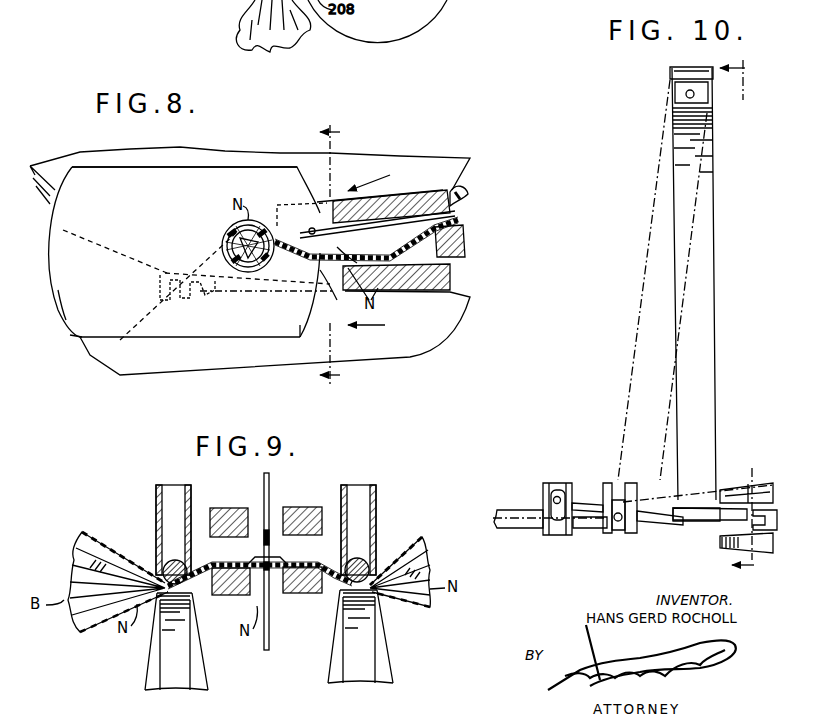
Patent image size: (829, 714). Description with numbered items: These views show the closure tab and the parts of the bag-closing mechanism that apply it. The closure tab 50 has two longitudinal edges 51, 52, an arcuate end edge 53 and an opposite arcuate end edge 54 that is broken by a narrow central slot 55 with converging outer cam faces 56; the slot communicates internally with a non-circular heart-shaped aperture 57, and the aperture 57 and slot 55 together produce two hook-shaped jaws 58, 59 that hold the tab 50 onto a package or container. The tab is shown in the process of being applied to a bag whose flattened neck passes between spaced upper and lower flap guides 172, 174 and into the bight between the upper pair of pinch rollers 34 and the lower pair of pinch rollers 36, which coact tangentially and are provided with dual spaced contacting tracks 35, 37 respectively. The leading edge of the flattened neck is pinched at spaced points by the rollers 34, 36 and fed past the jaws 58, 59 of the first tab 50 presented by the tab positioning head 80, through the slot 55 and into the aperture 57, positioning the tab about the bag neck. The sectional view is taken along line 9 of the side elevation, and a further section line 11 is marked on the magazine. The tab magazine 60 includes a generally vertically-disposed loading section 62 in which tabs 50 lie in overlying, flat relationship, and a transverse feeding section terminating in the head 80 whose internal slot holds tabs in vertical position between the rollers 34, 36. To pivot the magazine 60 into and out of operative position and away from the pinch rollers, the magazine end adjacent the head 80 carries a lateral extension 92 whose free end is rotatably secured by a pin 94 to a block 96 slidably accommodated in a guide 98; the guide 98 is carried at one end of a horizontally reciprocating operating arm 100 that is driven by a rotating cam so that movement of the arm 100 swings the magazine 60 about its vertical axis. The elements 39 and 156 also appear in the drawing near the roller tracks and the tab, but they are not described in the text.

In FIG. 8, the upper pair of pinch rollers 34 is at (424, 162).
In FIG. 8, the lower pair of pinch rollers 36 is at (117, 363).
In FIG. 8, the tape end / bead 39 is at (462, 197).
In FIG. 9, the tape end / bead 39 is at (186, 569).
In FIG. 8, the closure tab 50 is at (108, 196).
In FIG. 9, the closure tab 50 is at (256, 493).
In FIG. 10, the closure tab 50 is at (752, 506).
In FIG. 8, the longitudinal edge 51 is at (140, 164).
In FIG. 8, the longitudinal edge 52 is at (80, 337).
In FIG. 8, the arcuate end edge 53 is at (60, 309).
In FIG. 8, the arcuate end edge 54 is at (300, 329).
In FIG. 8, the central slot 55 is at (262, 238).
In FIG. 9, the central slot 55 is at (280, 553).
In FIG. 8, the cam faces 56 is at (312, 230).
In FIG. 8, the heart-shaped aperture 57 is at (225, 231).
In FIG. 8, the hook-shaped jaw 58 is at (346, 237).
In FIG. 8, the hook-shaped jaw 59 is at (310, 252).
In FIG. 8, the upper flap guide 172 is at (365, 206).
In FIG. 9, the upper flap guide 172 is at (232, 515).
In FIG. 8, the lower flap guide 174 is at (451, 277).
In FIG. 9, the lower flap guide 174 is at (218, 594).
In FIG. 8, the side block 156 is at (466, 238).
In FIG. 8, the section line 9— 9 is at (336, 255).
In FIG. 9, the contacting tracks 35 is at (157, 507).
In FIG. 9, the contacting tracks 37 is at (155, 661).
In FIG. 10, the magazine 60 is at (653, 142).
In FIG. 10, the loading section 62 is at (672, 76).
In FIG. 10, the section line 11— 11 is at (741, 315).
In FIG. 10, the tab positioning head 80 is at (664, 523).
In FIG. 10, the lateral extension 92 is at (608, 528).
In FIG. 10, the pin 94 is at (617, 522).
In FIG. 10, the block 96 is at (627, 490).
In FIG. 10, the guide 98 is at (607, 483).
In FIG. 10, the operating arm 100 is at (597, 508).